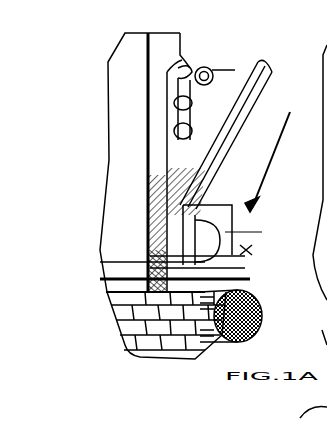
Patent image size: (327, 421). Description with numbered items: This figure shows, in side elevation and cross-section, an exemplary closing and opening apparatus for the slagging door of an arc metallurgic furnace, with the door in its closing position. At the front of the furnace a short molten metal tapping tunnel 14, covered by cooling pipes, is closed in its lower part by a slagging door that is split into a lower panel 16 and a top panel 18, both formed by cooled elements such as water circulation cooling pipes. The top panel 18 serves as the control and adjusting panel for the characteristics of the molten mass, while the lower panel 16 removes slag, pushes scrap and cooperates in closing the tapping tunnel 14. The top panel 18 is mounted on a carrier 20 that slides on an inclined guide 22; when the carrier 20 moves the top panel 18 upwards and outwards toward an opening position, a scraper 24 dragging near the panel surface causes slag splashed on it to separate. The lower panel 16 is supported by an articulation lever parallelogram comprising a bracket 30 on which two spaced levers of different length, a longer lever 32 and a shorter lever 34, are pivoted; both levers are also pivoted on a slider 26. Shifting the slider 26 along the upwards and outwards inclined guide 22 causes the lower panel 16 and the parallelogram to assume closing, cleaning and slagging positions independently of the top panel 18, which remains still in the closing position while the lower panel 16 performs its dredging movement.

The tapping tunnel 14 is at (140, 295).
The lower panel 16 is at (104, 276).
The top panel 18 is at (155, 213).
The carrier 20 is at (214, 66).
The inclined guide 22 is at (268, 76).
The scraper 24 is at (186, 142).
The slider 26 is at (232, 186).
The bracket 30 is at (243, 278).
The longer lever 32 is at (240, 236).
The shorter lever 34 is at (248, 250).